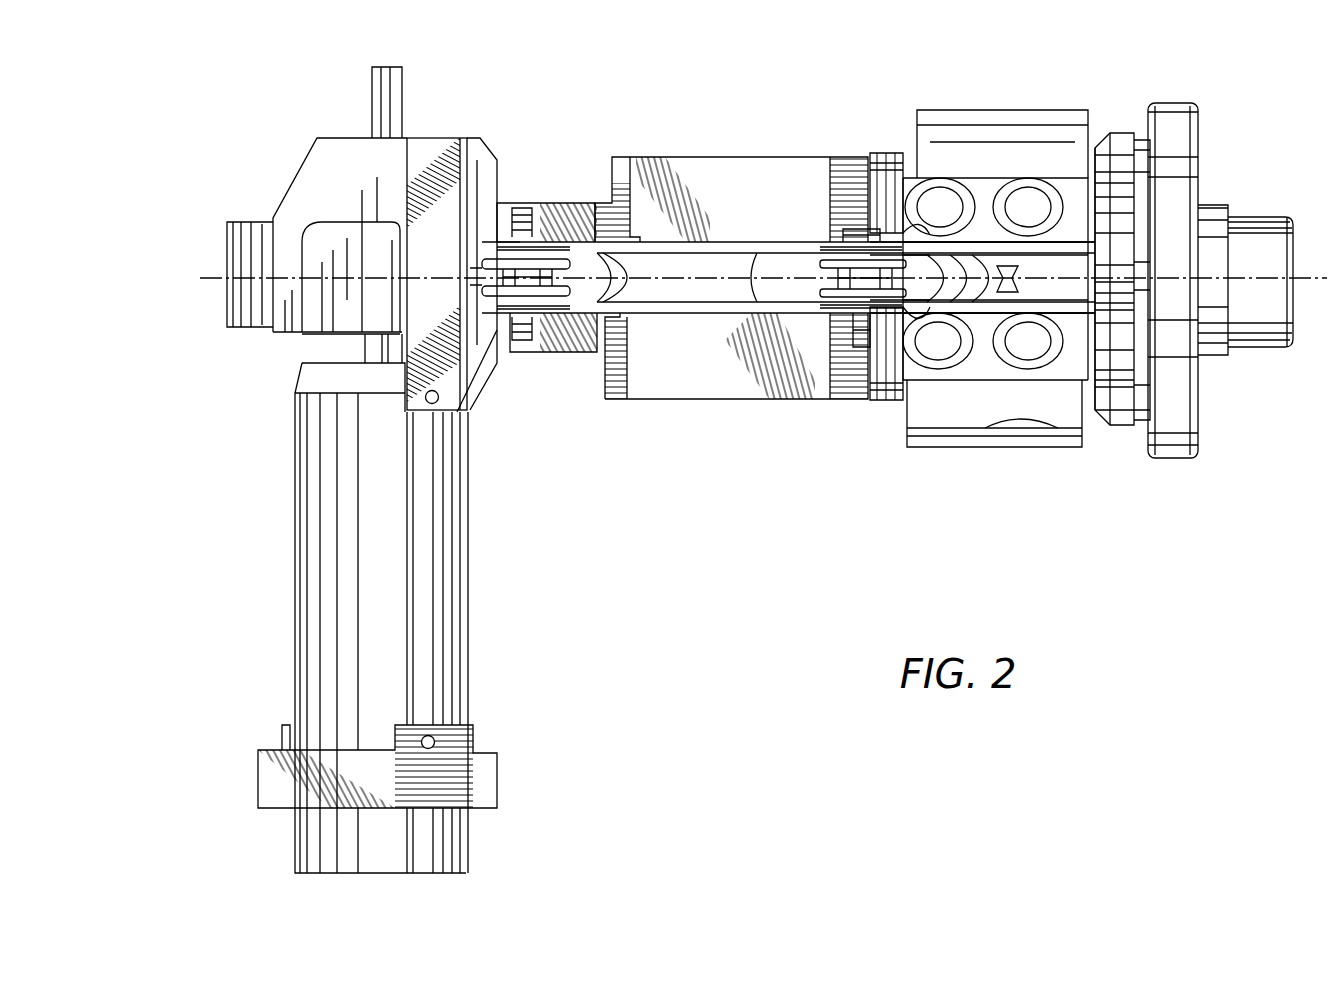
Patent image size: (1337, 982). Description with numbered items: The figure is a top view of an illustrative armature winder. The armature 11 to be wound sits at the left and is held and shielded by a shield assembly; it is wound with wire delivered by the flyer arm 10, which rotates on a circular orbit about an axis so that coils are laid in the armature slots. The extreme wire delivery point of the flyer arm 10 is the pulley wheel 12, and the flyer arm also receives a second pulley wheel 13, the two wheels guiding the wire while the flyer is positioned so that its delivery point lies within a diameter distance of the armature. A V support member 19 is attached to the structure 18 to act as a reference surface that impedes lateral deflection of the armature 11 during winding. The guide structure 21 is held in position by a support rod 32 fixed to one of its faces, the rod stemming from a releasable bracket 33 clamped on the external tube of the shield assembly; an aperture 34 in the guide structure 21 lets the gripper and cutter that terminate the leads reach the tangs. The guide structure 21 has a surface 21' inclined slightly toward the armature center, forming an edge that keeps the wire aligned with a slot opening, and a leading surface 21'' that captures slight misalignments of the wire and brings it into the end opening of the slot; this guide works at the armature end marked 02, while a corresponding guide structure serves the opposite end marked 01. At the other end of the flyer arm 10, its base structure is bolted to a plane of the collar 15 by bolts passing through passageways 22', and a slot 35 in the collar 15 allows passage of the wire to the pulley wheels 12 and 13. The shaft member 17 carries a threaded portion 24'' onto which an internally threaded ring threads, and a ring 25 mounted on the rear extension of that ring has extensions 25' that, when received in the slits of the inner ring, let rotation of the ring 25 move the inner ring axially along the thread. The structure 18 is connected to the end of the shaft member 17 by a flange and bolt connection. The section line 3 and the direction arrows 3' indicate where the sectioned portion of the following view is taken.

The flyer arm 10 is at (733, 222).
The armature 11 is at (228, 240).
The pulley wheel 12 is at (543, 253).
The pulley wheel 13 is at (818, 262).
The collar 15 is at (1047, 132).
The shaft member 17 is at (1270, 217).
The structure 18 is at (702, 385).
The V support member 19 is at (577, 347).
The guide structure 21 is at (340, 199).
The surface 21' is at (480, 265).
The leading surface 21'' is at (492, 377).
The passageways 22' is at (994, 277).
The threaded portion 24'' is at (1118, 279).
The ring 25 is at (1205, 276).
The extensions 25' is at (1191, 256).
The support rod 32 is at (428, 530).
The releasable bracket 33 is at (487, 777).
The aperture 34 is at (312, 335).
The slot 35 is at (1012, 264).
The end of armature 01 is at (496, 134).
The end of armature 02 is at (506, 436).
The section line 3 is at (745, 863).
The section direction 3' is at (1079, 367).